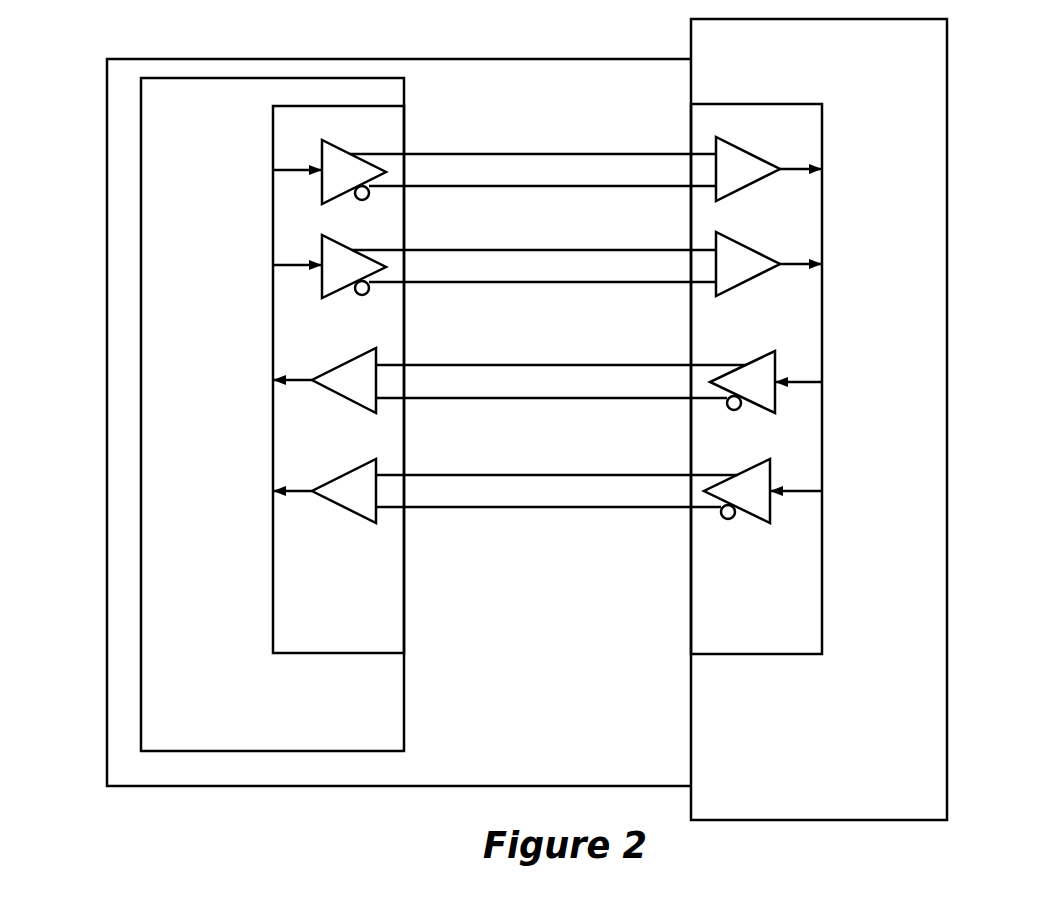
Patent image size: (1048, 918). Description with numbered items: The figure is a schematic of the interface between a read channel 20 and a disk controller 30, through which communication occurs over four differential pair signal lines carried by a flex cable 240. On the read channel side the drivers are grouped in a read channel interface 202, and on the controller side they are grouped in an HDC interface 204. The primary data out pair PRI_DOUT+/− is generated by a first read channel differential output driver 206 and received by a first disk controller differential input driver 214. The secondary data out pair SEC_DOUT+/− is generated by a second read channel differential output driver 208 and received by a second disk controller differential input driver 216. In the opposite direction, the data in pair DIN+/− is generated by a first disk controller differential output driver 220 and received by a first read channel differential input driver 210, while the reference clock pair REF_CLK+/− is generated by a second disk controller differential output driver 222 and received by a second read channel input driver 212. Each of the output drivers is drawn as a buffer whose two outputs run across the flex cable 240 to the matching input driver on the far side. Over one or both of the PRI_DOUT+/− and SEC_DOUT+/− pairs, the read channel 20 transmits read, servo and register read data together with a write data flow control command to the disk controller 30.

The read channel 20 is at (363, 740).
The disk controller 30 is at (914, 810).
The read channel interface 202 is at (363, 643).
The HDC interface 204 is at (779, 645).
The flex cable 240 is at (683, 776).
The first read channel differential output driver 206 is at (198, 147).
The second read channel differential output driver 208 is at (198, 247).
The first read channel differential input driver 210 is at (198, 380).
The second read channel input driver 212 is at (198, 482).
The first disk controller differential input driver 214 is at (848, 148).
The second disk controller differential input driver 216 is at (848, 247).
The first disk controller differential output driver 220 is at (848, 380).
The second disk controller differential output driver 222 is at (848, 480).